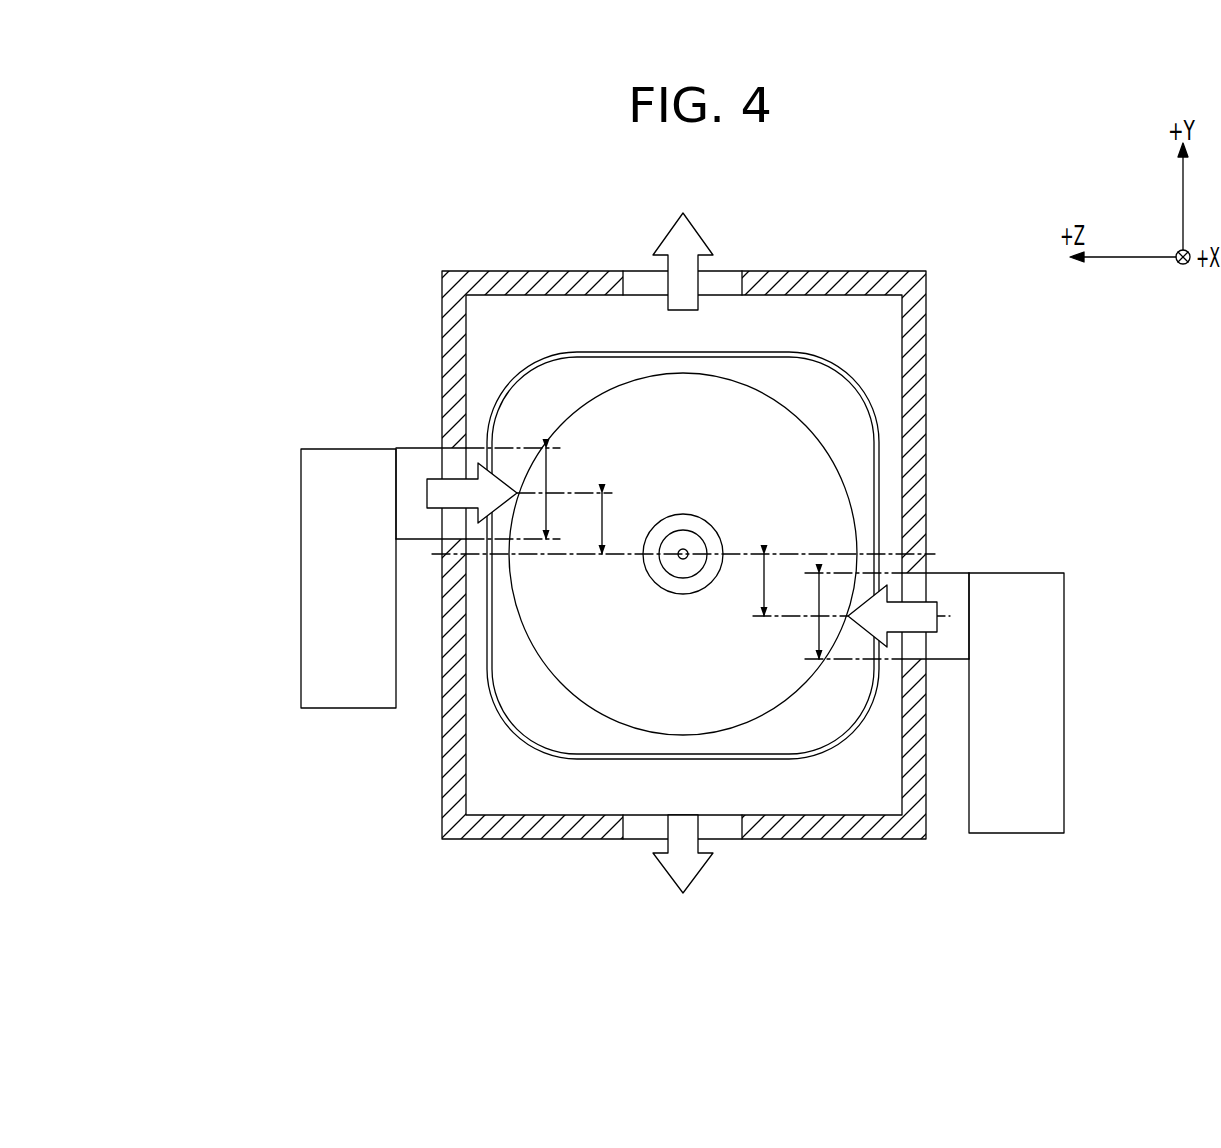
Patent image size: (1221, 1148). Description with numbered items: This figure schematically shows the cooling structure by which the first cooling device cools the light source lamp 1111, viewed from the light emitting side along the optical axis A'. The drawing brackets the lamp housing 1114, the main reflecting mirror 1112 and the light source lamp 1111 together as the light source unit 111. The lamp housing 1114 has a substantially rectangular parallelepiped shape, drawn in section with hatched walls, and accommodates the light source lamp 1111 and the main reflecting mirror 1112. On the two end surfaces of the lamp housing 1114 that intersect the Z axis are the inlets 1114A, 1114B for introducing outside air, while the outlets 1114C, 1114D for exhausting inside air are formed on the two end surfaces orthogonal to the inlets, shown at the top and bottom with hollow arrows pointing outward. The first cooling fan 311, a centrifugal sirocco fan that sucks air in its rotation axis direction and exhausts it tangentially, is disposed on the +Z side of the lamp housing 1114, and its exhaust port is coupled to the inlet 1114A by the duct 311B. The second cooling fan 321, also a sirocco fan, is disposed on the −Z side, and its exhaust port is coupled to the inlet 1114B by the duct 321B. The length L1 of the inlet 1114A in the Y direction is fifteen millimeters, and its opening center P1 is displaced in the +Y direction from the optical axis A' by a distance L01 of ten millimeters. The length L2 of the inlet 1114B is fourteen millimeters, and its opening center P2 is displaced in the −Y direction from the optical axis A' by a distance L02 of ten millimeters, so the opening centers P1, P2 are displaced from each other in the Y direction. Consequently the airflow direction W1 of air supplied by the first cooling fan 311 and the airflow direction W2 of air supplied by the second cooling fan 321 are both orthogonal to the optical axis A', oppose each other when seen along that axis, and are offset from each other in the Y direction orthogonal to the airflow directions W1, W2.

The pump chamber casing (11A) 111 is at (760, 554).
The lamp housing 1114 is at (920, 392).
The inlet 1114A is at (442, 453).
The inlet 1114B is at (915, 582).
The outlet 1114C is at (732, 272).
The outlet 1114D is at (732, 841).
The main reflecting mirror 1112 is at (878, 447).
The light source lamp 1111 is at (712, 516).
The first cooling fan 311 is at (302, 563).
The duct 311B is at (408, 458).
The second cooling fan 321 is at (1043, 661).
The duct 321B is at (947, 648).
The opening center P1 is at (452, 494).
The opening center P2 is at (912, 617).
The airflow direction W1 is at (468, 468).
The airflow direction W2 is at (887, 643).
The length L1 is at (552, 478).
The distance L01 is at (606, 520).
The distance L02 is at (762, 592).
The length L2 is at (818, 632).
The optical axis A' is at (677, 617).